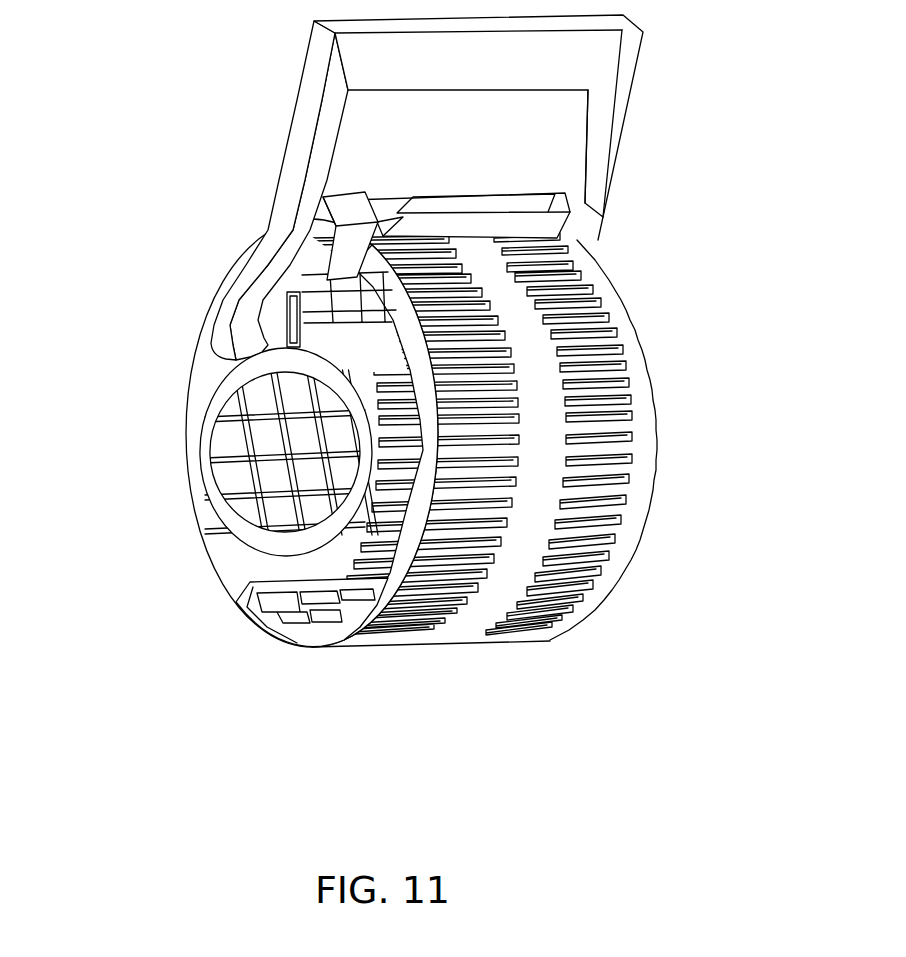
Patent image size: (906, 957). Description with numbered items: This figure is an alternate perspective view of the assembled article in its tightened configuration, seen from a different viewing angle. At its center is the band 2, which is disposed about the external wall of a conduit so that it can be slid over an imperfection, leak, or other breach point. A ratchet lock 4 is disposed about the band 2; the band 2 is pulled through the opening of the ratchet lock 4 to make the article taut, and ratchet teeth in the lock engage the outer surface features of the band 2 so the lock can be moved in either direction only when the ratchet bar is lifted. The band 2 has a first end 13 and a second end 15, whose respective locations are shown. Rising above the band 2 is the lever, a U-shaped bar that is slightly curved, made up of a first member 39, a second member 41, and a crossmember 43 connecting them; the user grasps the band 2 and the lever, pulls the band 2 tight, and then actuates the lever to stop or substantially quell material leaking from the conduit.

The band 2 is at (655, 400).
The ratchet lock 4 is at (327, 227).
The first end 13 is at (250, 583).
The second end 15 is at (250, 360).
The first member 39 is at (618, 127).
The second member 41 is at (298, 152).
The crossmember 43 is at (582, 62).